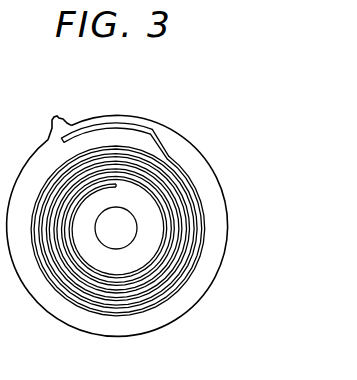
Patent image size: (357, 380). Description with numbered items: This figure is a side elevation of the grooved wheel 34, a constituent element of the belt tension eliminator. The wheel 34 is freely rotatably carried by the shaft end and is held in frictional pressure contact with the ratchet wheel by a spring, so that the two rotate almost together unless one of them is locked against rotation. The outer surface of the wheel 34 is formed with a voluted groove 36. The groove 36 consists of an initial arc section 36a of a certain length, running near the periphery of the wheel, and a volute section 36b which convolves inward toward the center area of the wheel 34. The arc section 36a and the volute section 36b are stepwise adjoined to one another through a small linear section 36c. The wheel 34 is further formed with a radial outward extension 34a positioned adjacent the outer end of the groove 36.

The grooved wheel 34 is at (219, 178).
The radial outward extension 34a is at (56, 115).
The voluted groove 36 is at (197, 248).
The initial arc section 36a is at (111, 122).
The volute section 36b is at (187, 273).
The small linear section 36c is at (172, 156).